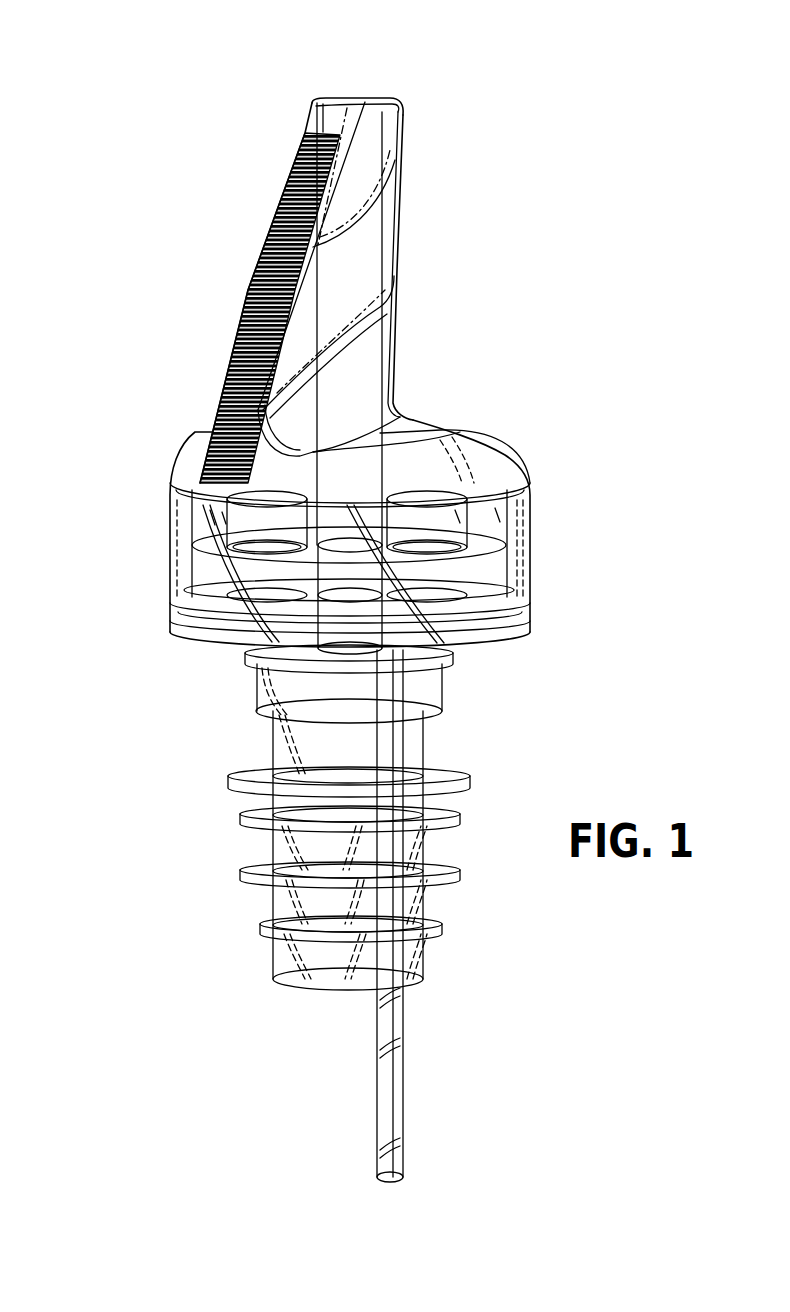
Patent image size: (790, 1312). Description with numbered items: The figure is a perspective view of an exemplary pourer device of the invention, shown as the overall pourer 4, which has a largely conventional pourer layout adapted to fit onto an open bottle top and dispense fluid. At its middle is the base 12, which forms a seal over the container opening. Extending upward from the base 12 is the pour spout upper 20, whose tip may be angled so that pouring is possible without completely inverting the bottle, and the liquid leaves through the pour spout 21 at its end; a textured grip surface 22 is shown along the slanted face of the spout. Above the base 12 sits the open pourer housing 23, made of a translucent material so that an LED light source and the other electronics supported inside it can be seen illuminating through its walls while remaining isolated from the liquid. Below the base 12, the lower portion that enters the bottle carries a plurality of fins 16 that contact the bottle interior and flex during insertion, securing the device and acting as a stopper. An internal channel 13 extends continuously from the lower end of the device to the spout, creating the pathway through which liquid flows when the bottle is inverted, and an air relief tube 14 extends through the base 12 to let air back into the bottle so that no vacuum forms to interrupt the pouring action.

The pourer assembly 4 is at (140, 822).
The base 12 is at (493, 643).
The channel 13 is at (338, 988).
The air relief tube 14 is at (403, 1070).
The fins 16 is at (477, 770).
The pour spout upper 20 is at (478, 320).
The pour spout 21 is at (360, 102).
The knurled grip surface 22 is at (246, 297).
The pourer housing 23 is at (530, 513).